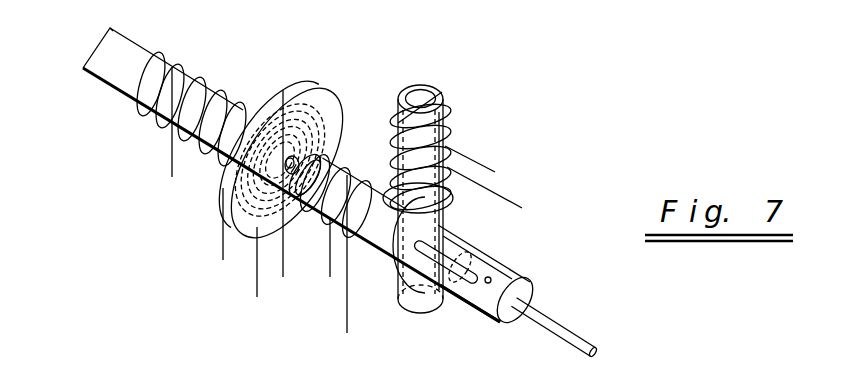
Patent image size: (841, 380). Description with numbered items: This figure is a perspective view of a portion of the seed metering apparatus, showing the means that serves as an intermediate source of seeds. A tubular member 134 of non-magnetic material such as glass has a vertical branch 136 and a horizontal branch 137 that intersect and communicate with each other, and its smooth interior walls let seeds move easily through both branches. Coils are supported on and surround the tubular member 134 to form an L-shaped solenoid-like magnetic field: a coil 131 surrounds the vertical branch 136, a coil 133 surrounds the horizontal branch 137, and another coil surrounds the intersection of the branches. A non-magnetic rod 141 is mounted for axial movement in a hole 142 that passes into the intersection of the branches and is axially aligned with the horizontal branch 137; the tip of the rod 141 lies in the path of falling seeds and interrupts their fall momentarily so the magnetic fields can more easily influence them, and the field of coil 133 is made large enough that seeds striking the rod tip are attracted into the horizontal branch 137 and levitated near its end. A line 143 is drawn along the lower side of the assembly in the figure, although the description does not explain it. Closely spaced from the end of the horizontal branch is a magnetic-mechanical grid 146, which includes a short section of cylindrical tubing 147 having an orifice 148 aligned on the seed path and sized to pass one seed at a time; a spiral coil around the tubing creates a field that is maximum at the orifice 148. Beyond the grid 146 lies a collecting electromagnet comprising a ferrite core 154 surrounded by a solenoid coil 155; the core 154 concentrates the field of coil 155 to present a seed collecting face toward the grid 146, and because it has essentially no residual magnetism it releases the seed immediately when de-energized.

The coil 131 is at (390, 121).
The coil 133 is at (316, 222).
The tubular member 134 is at (513, 273).
The vertical branch 136 is at (447, 187).
The horizontal branch 137 is at (378, 190).
The non-magnetic rod 141 is at (582, 341).
The hole 142 is at (490, 278).
The conductor line 143 is at (477, 306).
The magnetic-mechanical grid 146 is at (246, 237).
The cylindrical tubing 147 is at (295, 152).
The orifice 148 is at (294, 86).
The ferrite core 154 is at (122, 84).
The solenoid coil 155 is at (234, 108).